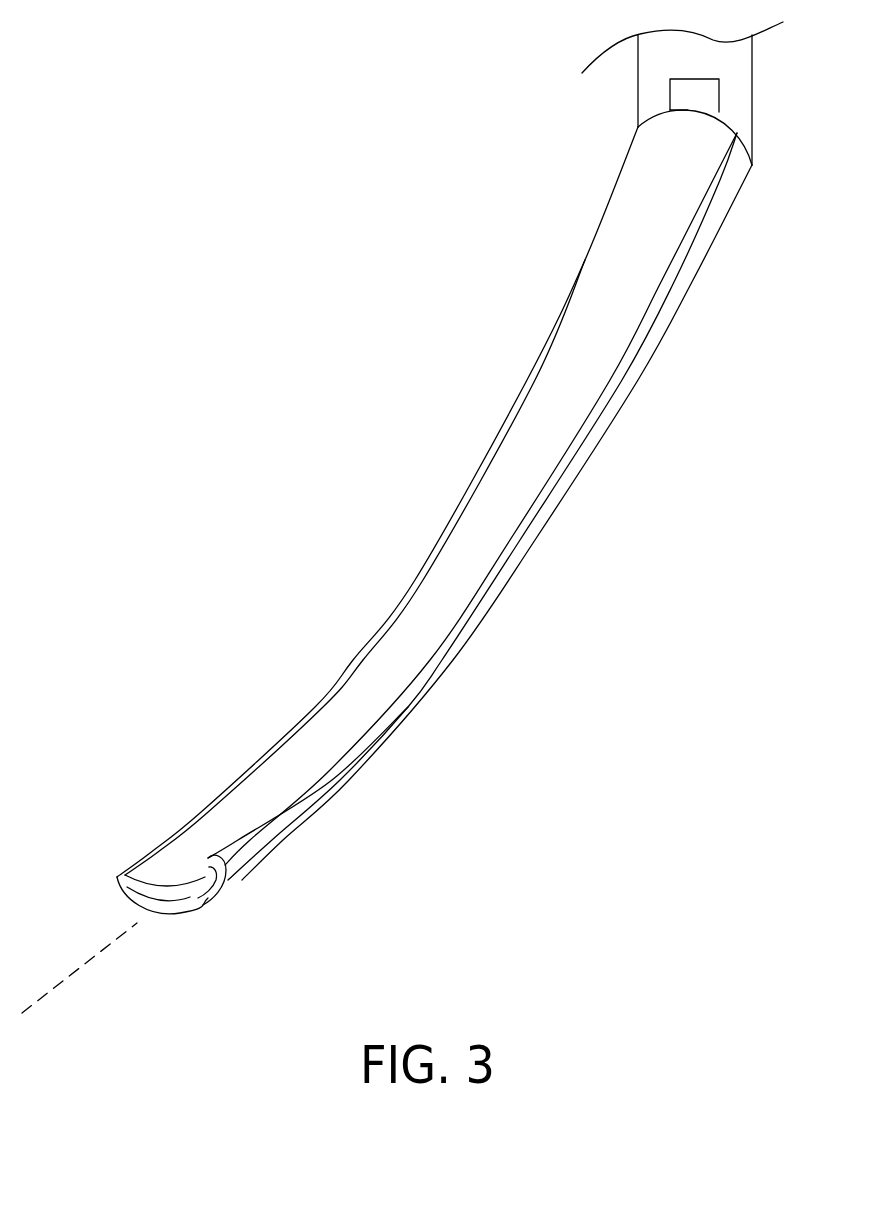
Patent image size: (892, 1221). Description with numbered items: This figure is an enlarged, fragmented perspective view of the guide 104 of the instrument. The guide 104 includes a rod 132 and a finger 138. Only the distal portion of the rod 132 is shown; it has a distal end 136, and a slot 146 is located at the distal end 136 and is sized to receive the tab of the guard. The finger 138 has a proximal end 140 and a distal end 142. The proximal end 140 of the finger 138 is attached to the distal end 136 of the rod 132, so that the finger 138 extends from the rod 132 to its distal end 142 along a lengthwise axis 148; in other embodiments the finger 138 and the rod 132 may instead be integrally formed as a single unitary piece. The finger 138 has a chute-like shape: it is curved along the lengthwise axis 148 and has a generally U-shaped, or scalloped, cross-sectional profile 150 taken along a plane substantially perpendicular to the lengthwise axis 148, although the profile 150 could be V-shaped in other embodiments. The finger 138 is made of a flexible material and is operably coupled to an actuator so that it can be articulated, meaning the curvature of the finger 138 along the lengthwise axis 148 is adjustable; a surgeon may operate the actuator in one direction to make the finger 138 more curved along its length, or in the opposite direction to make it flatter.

The guide 104 is at (525, 227).
The rod 132 is at (625, 78).
The distal end 136 is at (752, 72).
The finger 138 is at (352, 605).
The proximal end 140 is at (733, 213).
The distal end 142 is at (272, 852).
The slot 146 is at (720, 98).
The lengthwise axis 148 is at (78, 970).
The cross-sectional profile 150 is at (188, 887).